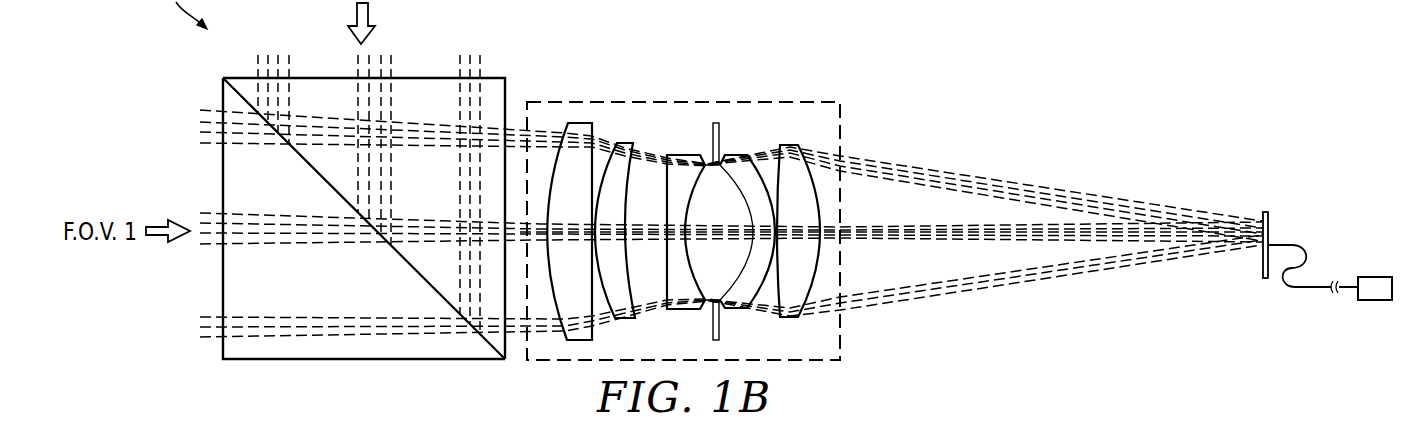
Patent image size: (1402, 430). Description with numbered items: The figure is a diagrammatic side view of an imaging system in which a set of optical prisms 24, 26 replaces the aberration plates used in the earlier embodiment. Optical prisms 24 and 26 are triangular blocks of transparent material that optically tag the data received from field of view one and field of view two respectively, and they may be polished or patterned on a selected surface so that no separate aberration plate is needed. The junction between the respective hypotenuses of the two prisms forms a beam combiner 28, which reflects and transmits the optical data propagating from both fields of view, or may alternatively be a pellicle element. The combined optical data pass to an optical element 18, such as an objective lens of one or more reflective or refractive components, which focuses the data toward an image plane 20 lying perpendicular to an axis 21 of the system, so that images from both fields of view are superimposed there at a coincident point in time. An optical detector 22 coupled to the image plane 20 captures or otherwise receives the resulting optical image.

The optical element 18 is at (755, 102).
The image plane 20 is at (1262, 260).
The axis 21 is at (213, 213).
The optical detector 22 is at (1374, 277).
The optical prism 24 is at (302, 298).
The optical prism 26 is at (440, 193).
The beam combiner 28 is at (398, 258).